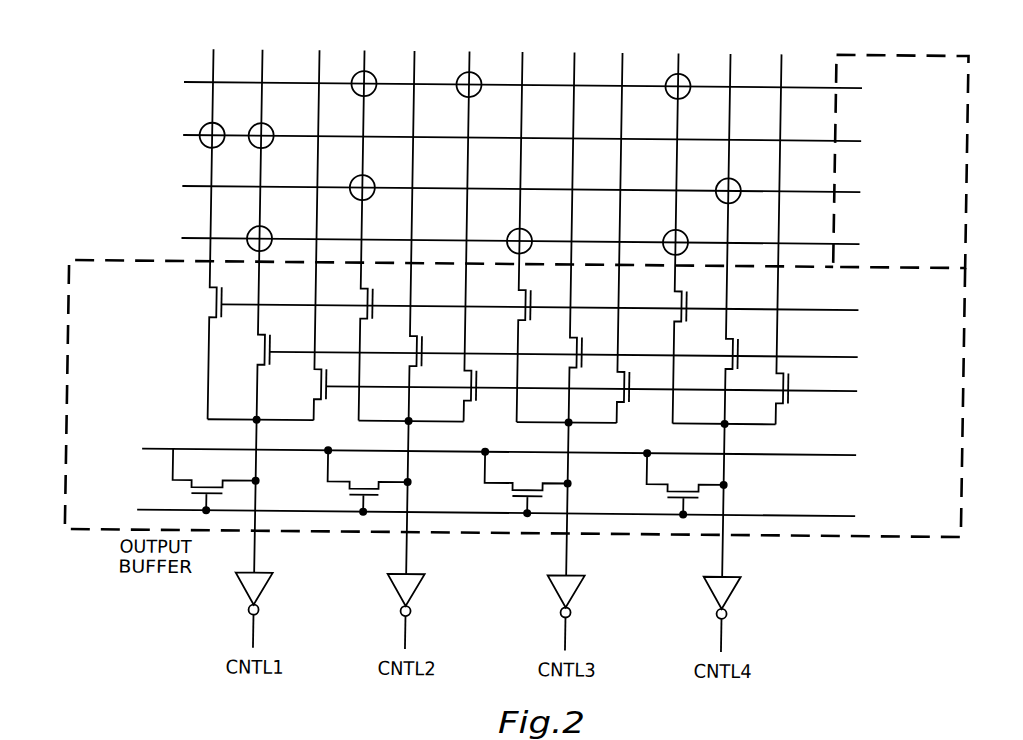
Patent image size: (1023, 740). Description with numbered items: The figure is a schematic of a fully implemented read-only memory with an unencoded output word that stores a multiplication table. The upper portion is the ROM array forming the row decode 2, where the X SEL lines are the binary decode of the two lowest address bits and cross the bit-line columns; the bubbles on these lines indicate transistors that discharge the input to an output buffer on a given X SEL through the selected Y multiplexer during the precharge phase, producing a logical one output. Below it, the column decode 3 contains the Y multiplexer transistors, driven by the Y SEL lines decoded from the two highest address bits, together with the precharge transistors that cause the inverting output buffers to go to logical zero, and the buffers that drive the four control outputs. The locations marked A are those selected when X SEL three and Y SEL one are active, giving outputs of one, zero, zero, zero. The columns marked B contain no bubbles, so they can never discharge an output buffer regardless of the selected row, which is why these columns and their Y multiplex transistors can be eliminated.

The row decode 2 is at (968, 133).
The column decode 3 is at (969, 331).
The selected ROM locations A is at (463, 236).
The columns of bits without bubbles B is at (549, 303).